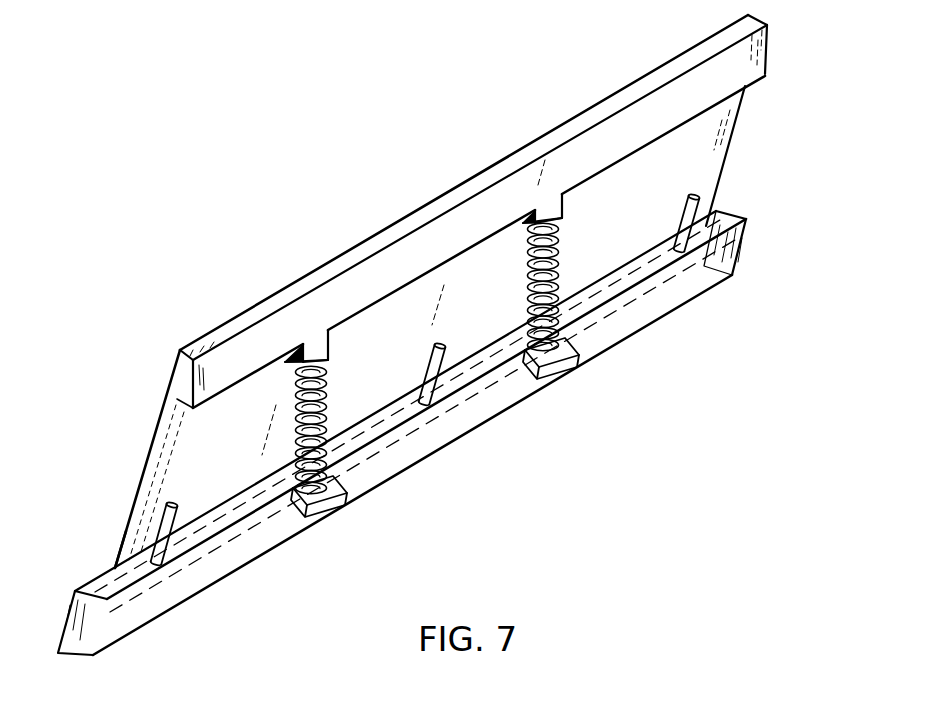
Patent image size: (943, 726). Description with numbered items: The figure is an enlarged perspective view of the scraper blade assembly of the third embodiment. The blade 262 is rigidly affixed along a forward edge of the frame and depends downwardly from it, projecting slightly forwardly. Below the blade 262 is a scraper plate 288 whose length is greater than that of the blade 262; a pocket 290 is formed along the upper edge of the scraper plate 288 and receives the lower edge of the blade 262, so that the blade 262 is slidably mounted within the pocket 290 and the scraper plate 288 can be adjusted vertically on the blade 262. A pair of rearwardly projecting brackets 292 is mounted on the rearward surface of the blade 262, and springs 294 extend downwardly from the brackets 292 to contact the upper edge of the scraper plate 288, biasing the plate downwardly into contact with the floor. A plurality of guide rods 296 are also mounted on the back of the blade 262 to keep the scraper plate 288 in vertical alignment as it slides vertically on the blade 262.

The blade 262 is at (145, 468).
The scraper plate 288 is at (87, 628).
The pocket 290 is at (115, 568).
The brackets 292 is at (318, 342).
The springs 294 is at (335, 440).
The guide rods 296 is at (168, 530).